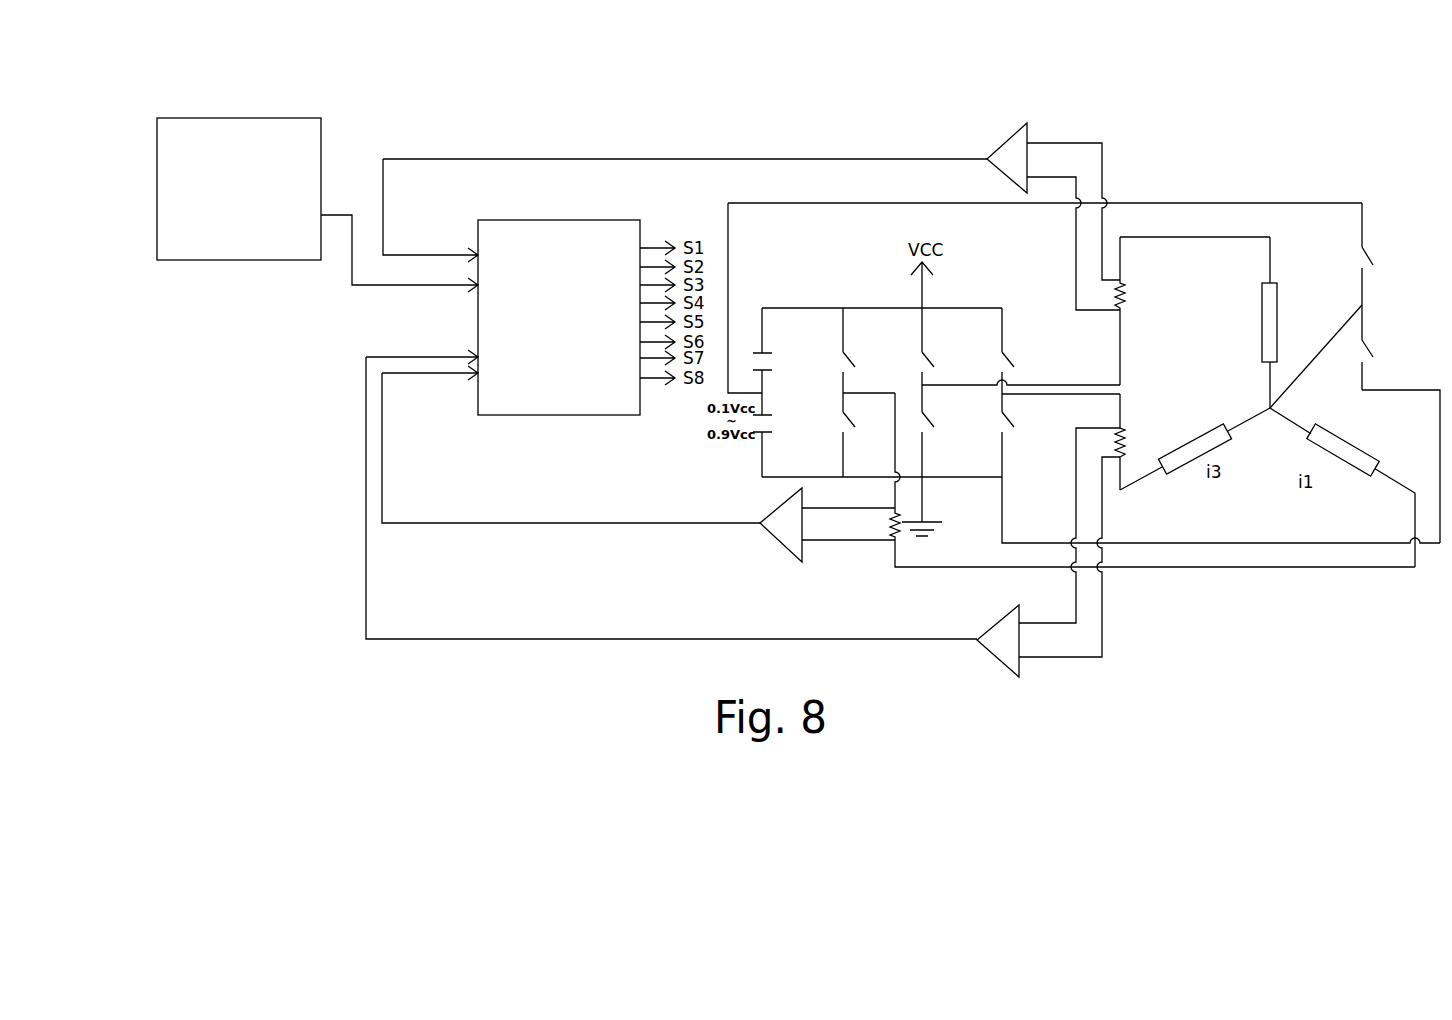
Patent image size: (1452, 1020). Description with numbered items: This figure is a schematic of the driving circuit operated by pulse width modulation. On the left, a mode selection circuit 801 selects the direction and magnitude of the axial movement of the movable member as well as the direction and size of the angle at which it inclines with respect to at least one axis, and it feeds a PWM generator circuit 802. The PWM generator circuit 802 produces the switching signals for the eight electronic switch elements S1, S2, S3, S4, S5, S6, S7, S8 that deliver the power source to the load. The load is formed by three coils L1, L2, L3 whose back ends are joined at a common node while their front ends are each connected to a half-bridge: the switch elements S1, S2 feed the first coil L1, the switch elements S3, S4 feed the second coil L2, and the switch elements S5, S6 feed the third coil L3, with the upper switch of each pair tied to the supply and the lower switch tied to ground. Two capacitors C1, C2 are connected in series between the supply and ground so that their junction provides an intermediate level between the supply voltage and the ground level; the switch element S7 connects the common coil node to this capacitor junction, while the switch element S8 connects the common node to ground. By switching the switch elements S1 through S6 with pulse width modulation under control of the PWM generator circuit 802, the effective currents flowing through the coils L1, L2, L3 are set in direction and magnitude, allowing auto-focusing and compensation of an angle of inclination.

The mode selection circuit 801 is at (288, 118).
The PWM generator circuit 802 is at (560, 220).
The capacitor C1 is at (779, 360).
The capacitor C2 is at (779, 425).
The electronic switch element S1 is at (865, 350).
The electronic switch element S2 is at (865, 435).
The electronic switch element S3 is at (944, 346).
The electronic switch element S4 is at (944, 431).
The electronic switch element S5 is at (1024, 351).
The electronic switch element S6 is at (1024, 435).
The electronic switch element S7 is at (1384, 293).
The electronic switch element S8 is at (1384, 365).
The coil L1 is at (1342, 487).
The coil L2 is at (1284, 322).
The coil L3 is at (1195, 449).